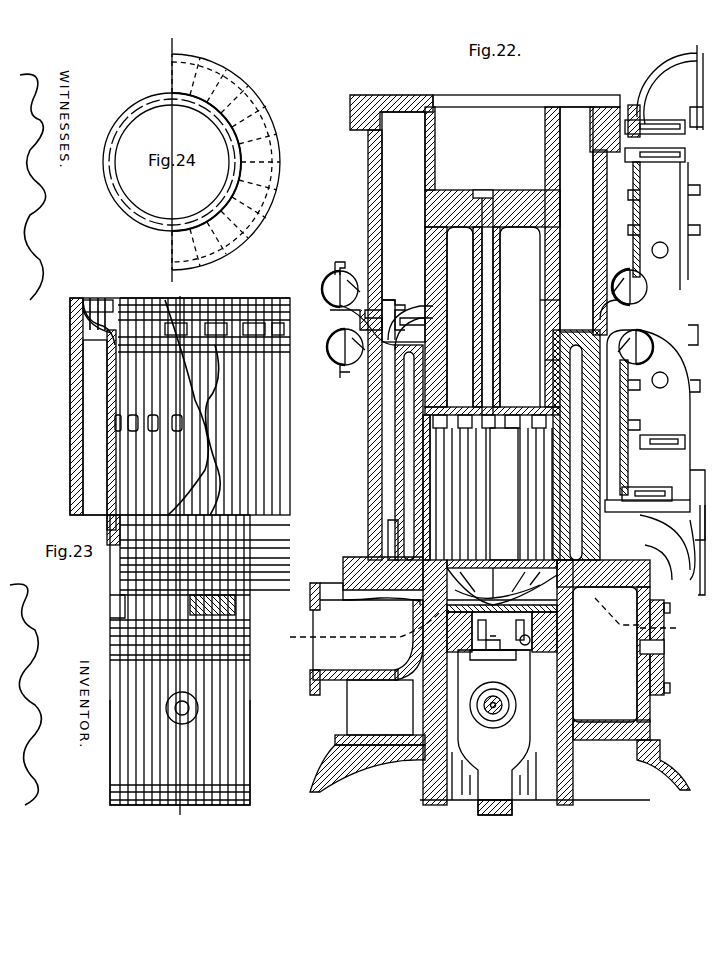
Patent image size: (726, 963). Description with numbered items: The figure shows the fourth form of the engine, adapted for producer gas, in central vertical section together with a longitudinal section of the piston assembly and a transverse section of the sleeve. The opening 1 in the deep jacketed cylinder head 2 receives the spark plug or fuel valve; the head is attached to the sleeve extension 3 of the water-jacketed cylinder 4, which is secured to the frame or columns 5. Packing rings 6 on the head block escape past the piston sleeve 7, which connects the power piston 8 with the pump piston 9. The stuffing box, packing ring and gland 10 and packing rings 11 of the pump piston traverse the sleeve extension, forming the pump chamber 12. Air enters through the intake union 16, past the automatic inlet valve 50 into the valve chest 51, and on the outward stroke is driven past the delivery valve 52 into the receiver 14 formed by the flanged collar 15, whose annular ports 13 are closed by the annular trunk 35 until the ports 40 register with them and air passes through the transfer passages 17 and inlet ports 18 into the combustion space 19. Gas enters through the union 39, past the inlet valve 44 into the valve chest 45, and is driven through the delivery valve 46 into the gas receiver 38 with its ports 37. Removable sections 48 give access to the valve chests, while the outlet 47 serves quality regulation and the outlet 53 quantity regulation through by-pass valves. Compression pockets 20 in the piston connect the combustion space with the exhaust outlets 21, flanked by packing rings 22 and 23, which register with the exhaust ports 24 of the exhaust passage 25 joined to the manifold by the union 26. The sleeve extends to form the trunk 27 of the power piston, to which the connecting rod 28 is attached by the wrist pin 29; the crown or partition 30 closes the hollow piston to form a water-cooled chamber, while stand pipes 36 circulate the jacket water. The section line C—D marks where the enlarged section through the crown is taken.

In FIG. 22, the opening for the atomizing valve 1 is at (487, 380).
In FIG. 22, the cylinder head 2 is at (395, 95).
In FIG. 22, the sleeve extension 3 is at (368, 209).
In FIG. 22, the water-jacketed cylinder 4 is at (343, 580).
In FIG. 22, the frame or columns 5 is at (330, 780).
In FIG. 22, the packing rings 6 is at (545, 380).
In FIG. 24, the piston sleeve 7 is at (226, 197).
In FIG. 23, the piston sleeve 7 is at (250, 537).
In FIG. 22, the piston sleeve 7 is at (528, 470).
In FIG. 22, the power piston 8 is at (493, 590).
In FIG. 22, the pump piston 9 is at (583, 302).
In FIG. 22, the stuffing box, packing ring and gland 10 is at (500, 309).
In FIG. 23, the packing rings 11 is at (286, 306).
In FIG. 22, the packing rings 11 is at (395, 302).
In FIG. 22, the pump chamber 12 is at (403, 227).
In FIG. 22, the air inlet ports 13 is at (484, 288).
In FIG. 22, the air passage or receiver 14 is at (322, 289).
In FIG. 22, the flanged collar 15 is at (343, 278).
In FIG. 22, the intake union 16 is at (697, 48).
In FIG. 24, the transfer passages 17 is at (240, 157).
In FIG. 23, the transfer passages 17 is at (108, 378).
In FIG. 22, the transfer passages 17 is at (420, 350).
In FIG. 23, the inlet ports 18 is at (112, 420).
In FIG. 22, the inlet ports 18 is at (515, 428).
In FIG. 22, the combustion space 19 is at (502, 494).
In FIG. 22, the compression pockets 20 is at (452, 603).
In FIG. 23, the exhaust outlets 21 is at (95, 605).
In FIG. 22, the exhaust outlets 21 is at (450, 598).
In FIG. 23, the packing ring 22 is at (250, 570).
In FIG. 22, the packing ring 22 is at (395, 558).
In FIG. 23, the packing ring 23 is at (250, 658).
In FIG. 22, the packing ring 23 is at (573, 655).
In FIG. 22, the exhaust ports 24 is at (440, 610).
In FIG. 22, the exhaust passage 25 is at (368, 640).
In FIG. 22, the union 26 is at (310, 685).
In FIG. 23, the trunk 27 is at (250, 730).
In FIG. 22, the trunk 27 is at (440, 705).
In FIG. 22, the connecting rod 28 is at (535, 725).
In FIG. 23, the wrist pin 29 is at (198, 706).
In FIG. 22, the wrist pin 29 is at (500, 705).
In FIG. 22, the crown or partition 30 is at (532, 640).
In FIG. 24, the annular trunk 35 is at (280, 182).
In FIG. 22, the annular trunk 35 is at (290, 432).
In FIG. 22, the stand pipes 36 is at (617, 608).
In FIG. 22, the gas inlet ports 37 is at (490, 347).
In FIG. 22, the gas passage or receiver 38 is at (327, 347).
In FIG. 22, the union 39 is at (698, 578).
In FIG. 24, the ports 40 is at (280, 157).
In FIG. 23, the ports 40 is at (83, 333).
In FIG. 22, the ports 40 is at (545, 325).
In FIG. 22, the automatic inlet valve 44 is at (655, 512).
In FIG. 22, the valve chest 45 is at (646, 497).
In FIG. 22, the delivery valve 46 is at (662, 444).
In FIG. 22, the outlet 47 is at (660, 388).
In FIG. 22, the removable sections 48 is at (633, 215).
In FIG. 22, the automatic inlet valve 50 is at (655, 124).
In FIG. 22, the valve chest 51 is at (632, 105).
In FIG. 22, the delivery valve 52 is at (655, 162).
In FIG. 22, the outlet 53 is at (660, 242).
In FIG. 22, the section line C—D C is at (360, 629).
In FIG. 22, the section line C— D is at (671, 632).